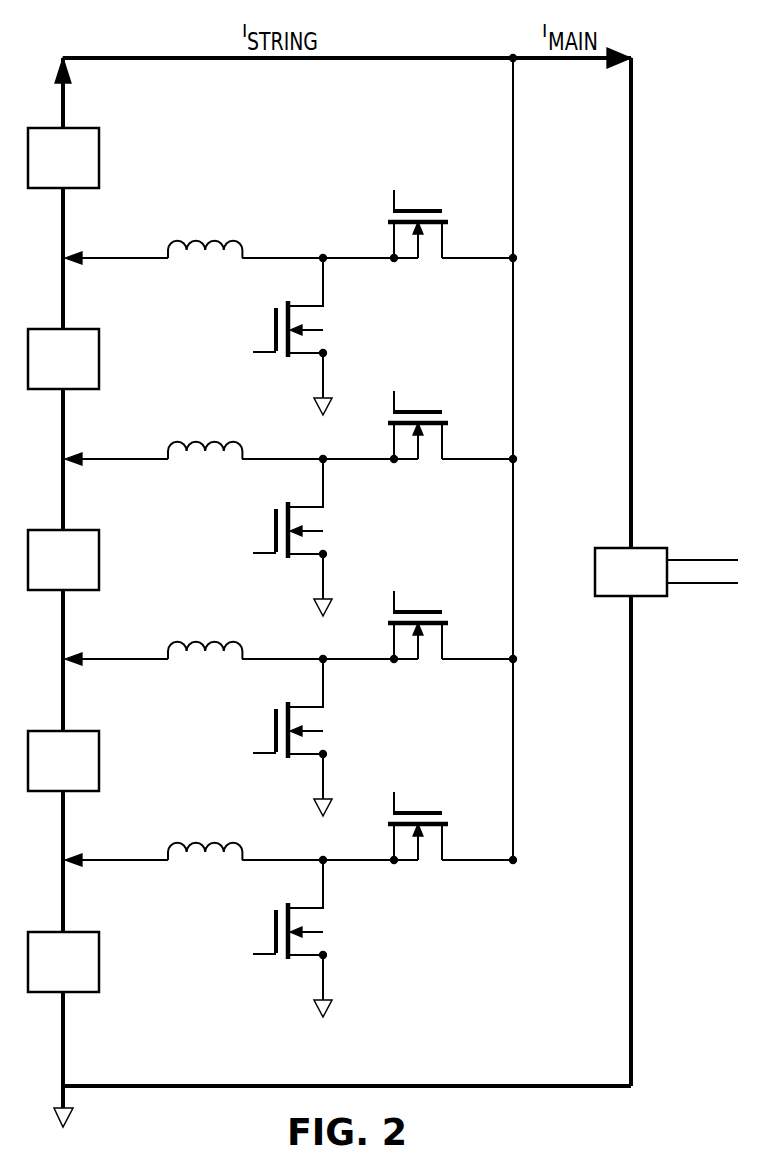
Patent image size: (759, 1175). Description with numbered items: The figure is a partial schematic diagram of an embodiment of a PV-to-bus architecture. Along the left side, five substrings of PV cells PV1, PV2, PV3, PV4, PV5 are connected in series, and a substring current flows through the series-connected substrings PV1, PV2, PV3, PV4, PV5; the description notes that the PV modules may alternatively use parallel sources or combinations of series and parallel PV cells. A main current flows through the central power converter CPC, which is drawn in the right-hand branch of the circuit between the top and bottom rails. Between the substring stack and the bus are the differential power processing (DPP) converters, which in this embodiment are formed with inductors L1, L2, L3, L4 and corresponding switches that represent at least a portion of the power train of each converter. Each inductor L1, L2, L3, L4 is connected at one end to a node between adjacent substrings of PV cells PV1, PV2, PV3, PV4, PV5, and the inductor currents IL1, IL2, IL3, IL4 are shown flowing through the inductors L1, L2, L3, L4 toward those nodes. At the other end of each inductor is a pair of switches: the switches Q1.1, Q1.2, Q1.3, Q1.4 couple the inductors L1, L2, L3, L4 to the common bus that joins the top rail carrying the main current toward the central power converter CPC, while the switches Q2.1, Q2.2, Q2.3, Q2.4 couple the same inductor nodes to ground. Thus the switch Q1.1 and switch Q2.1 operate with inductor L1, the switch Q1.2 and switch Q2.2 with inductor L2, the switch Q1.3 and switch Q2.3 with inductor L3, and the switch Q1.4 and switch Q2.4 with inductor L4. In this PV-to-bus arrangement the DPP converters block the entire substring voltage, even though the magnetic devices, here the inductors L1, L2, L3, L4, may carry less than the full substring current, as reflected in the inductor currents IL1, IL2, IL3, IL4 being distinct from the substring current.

The substring of PV cells PV1 is at (63, 962).
The substring of PV cells PV2 is at (63, 761).
The substring of PV cells PV3 is at (63, 560).
The substring of PV cells PV4 is at (63, 359).
The substring of PV cells PV5 is at (63, 158).
The inductor L1 is at (205, 831).
The inductor L2 is at (205, 630).
The inductor L3 is at (205, 430).
The inductor L4 is at (205, 229).
The switch Q1.1 is at (420, 815).
The switch Q1.2 is at (420, 614).
The switch Q1.3 is at (420, 414).
The switch Q1.4 is at (420, 213).
The switch Q2.1 is at (271, 938).
The switch Q2.2 is at (271, 737).
The switch Q2.3 is at (271, 537).
The switch Q2.4 is at (271, 336).
The inductor current I_L,1 IL1 is at (116, 841).
The inductor current I_L,2 IL2 is at (116, 640).
The inductor current I_L,3 IL3 is at (116, 440).
The inductor current I_L,4 IL4 is at (116, 239).
The central power converter CPC is at (666, 572).